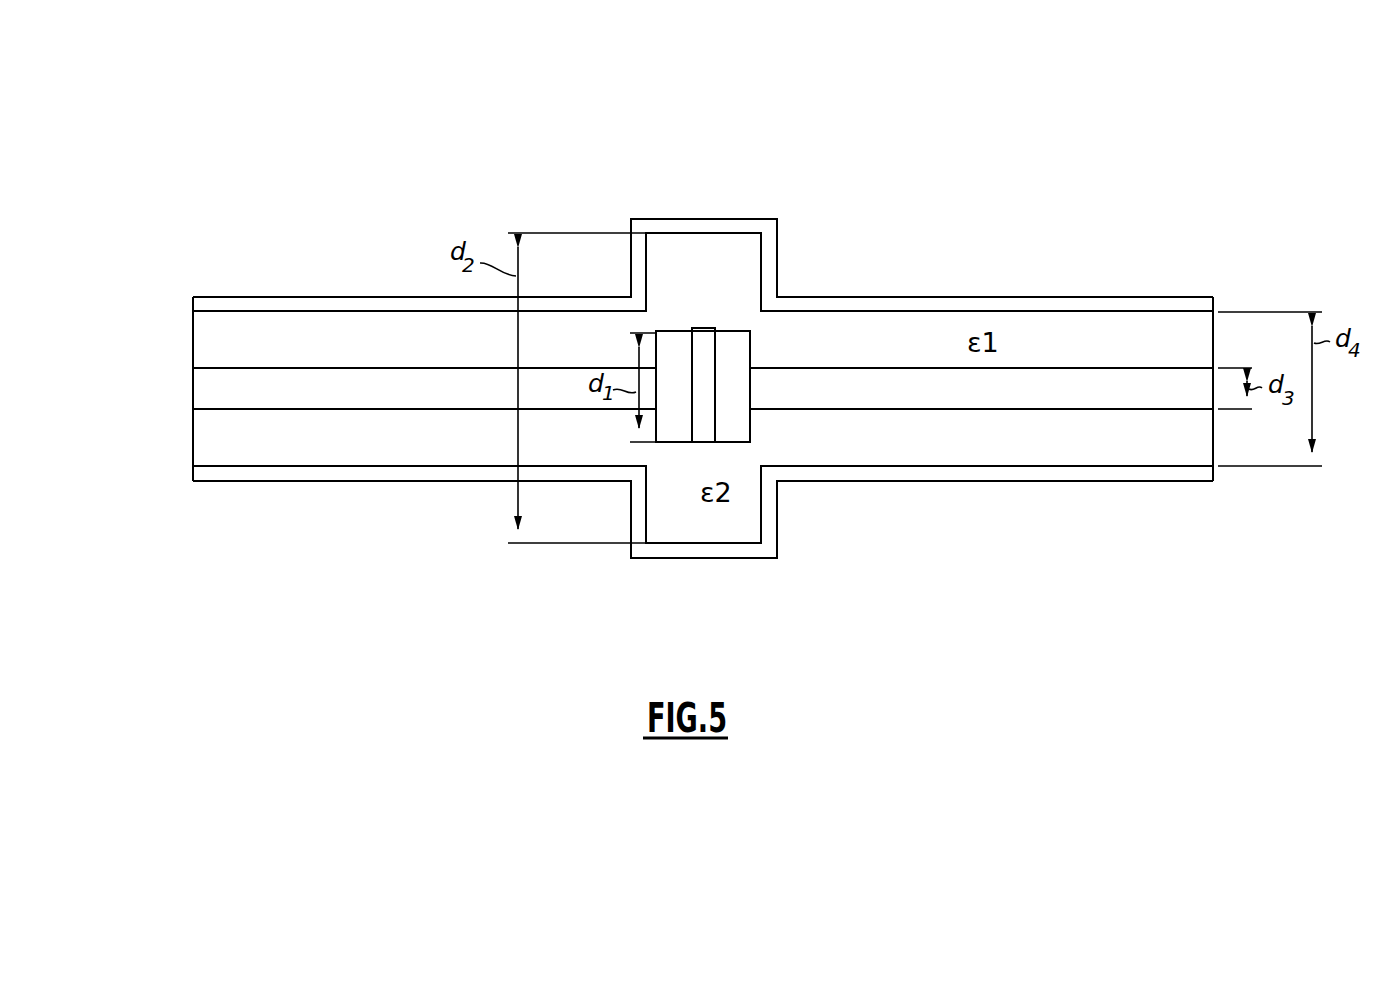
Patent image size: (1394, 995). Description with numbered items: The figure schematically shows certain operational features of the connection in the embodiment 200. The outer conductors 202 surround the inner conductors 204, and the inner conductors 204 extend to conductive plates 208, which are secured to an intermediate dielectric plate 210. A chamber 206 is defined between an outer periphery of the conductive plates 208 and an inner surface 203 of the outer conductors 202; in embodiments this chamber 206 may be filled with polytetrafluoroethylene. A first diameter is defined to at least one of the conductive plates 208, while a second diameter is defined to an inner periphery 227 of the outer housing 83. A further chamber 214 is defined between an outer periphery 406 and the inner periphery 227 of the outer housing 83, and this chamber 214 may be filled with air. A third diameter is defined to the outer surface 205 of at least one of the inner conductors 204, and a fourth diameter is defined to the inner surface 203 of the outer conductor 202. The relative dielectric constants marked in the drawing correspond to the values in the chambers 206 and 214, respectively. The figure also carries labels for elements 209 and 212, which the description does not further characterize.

The embodiment 200 is at (912, 125).
The outer conductor 202 is at (231, 297).
The inner surface 203 is at (934, 313).
The inner conductor 204 is at (207, 392).
The outer surface 205 is at (1068, 368).
The chamber 206 is at (1123, 437).
The conductive plate 208 is at (688, 430).
The insert body 209 is at (668, 331).
The intermediate dielectric plate 210 is at (727, 290).
The outer conductor wall 212 is at (630, 523).
The chamber 214 is at (717, 528).
The inner periphery 227 is at (747, 237).
The outer periphery 406 is at (742, 328).
The outer housing 83 is at (650, 560).